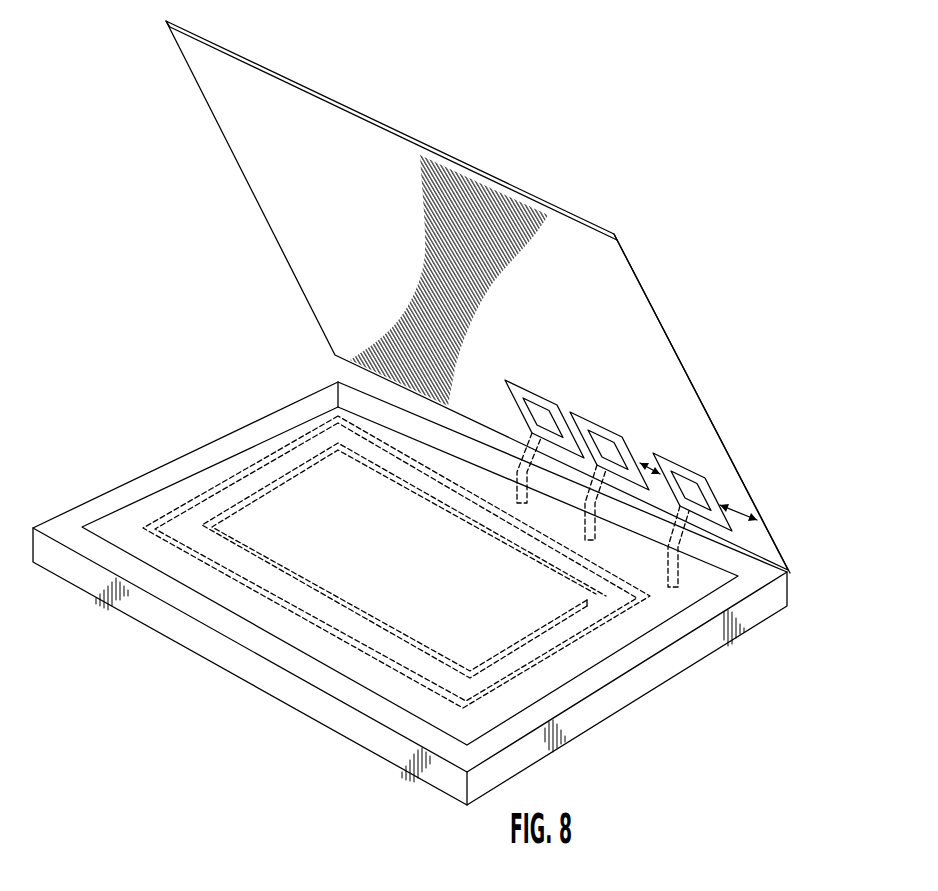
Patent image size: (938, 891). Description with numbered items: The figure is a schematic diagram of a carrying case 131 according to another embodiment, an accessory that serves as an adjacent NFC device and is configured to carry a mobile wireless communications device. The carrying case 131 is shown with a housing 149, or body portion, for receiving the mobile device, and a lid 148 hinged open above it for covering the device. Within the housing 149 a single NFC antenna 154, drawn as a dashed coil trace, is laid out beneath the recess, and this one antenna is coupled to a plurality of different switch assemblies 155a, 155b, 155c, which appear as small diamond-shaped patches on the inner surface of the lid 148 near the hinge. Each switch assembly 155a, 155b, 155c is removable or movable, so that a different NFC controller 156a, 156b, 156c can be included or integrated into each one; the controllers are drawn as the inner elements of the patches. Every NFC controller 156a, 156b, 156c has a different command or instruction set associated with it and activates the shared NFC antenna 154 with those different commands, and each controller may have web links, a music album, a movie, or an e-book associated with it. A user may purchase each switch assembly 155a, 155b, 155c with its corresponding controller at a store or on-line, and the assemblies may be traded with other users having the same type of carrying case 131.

The carrying case 131 is at (216, 385).
The lid 148 is at (226, 140).
The housing 149 is at (698, 663).
The NFC antenna 154 is at (217, 486).
The switch assembly 155a is at (553, 405).
The switch assembly 155b is at (632, 447).
The switch assembly 155c is at (713, 487).
The NFC controller 156a is at (538, 415).
The NFC controller 156b is at (607, 450).
The NFC controller 156c is at (688, 487).